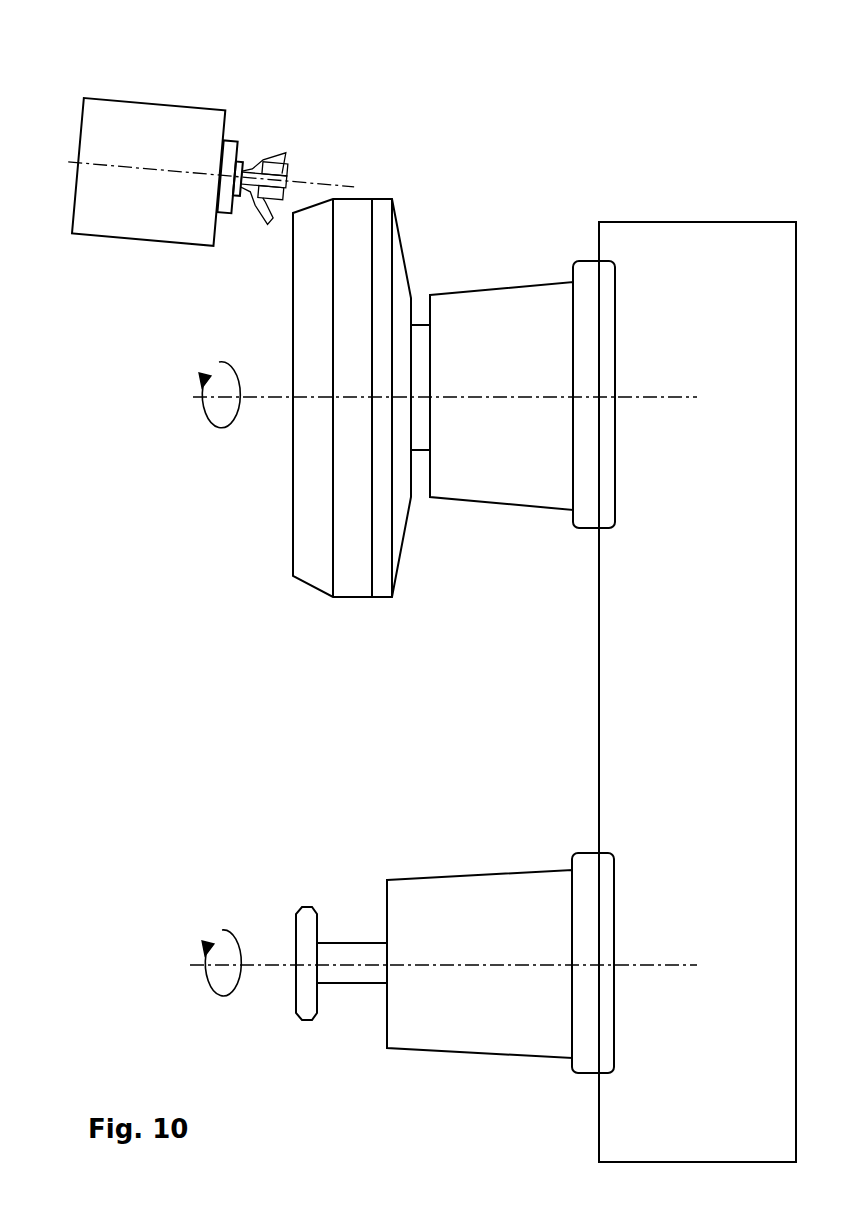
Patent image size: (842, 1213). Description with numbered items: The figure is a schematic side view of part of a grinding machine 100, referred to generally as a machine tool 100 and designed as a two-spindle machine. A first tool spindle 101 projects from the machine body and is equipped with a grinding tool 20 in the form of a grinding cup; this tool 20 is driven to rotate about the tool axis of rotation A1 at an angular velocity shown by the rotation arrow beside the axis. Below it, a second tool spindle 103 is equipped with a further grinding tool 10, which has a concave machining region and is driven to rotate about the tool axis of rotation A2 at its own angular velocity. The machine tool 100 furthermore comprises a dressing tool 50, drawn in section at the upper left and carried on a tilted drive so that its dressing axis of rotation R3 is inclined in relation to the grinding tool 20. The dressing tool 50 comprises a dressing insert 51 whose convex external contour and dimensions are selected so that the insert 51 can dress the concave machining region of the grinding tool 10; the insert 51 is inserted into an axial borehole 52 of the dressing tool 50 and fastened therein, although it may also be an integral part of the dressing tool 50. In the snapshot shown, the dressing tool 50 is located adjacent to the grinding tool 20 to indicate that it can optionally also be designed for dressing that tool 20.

The grinding machine 100 is at (648, 47).
The grinding tool 20 is at (417, 200).
The first tool spindle 101 is at (500, 505).
The second tool spindle 103 is at (427, 1052).
The grinding tool 10 is at (310, 883).
The dressing tool 50 is at (279, 140).
The dressing insert 51 is at (286, 165).
The axial borehole 52 is at (250, 172).
The dressing axis of rotation R3 is at (70, 160).
The tool axis of rotation A1 is at (462, 397).
The tool axis of rotation A2 is at (459, 965).